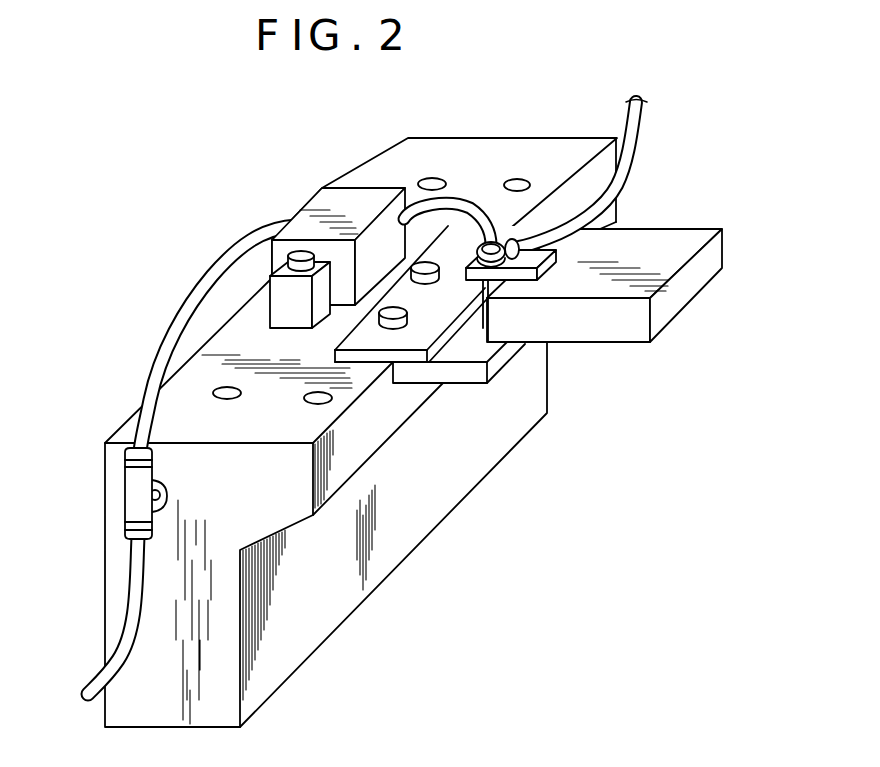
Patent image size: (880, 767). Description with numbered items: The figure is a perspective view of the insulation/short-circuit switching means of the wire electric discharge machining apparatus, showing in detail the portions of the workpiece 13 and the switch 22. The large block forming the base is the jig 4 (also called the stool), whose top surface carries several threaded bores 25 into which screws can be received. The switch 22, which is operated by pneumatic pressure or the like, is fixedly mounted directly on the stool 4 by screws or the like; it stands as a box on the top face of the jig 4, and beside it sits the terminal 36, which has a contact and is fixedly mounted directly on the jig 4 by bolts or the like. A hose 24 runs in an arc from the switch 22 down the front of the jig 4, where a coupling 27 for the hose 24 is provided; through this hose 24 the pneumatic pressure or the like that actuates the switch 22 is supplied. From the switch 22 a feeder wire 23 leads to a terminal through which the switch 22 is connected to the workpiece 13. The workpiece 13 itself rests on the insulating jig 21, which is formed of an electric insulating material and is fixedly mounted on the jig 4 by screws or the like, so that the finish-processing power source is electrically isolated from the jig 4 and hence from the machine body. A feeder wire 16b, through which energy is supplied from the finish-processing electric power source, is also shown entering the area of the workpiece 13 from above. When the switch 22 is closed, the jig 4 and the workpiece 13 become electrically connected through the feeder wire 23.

The jig 4 is at (543, 147).
The workpiece 13 is at (661, 232).
The feeder wire 16b is at (637, 141).
The insulating jig 21 is at (478, 378).
The switch 22 is at (328, 205).
The feeder wire 23 is at (463, 200).
The hose 24 is at (240, 232).
The threaded bores 25 is at (421, 178).
The coupling 27 is at (148, 519).
The terminal 36 is at (288, 263).